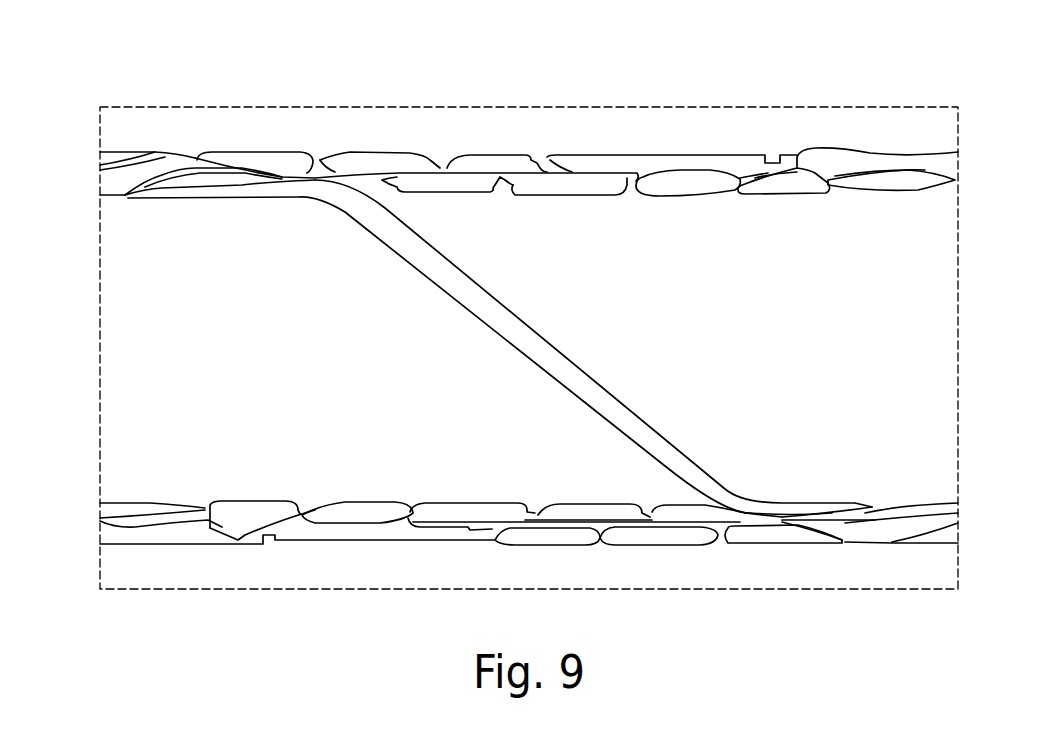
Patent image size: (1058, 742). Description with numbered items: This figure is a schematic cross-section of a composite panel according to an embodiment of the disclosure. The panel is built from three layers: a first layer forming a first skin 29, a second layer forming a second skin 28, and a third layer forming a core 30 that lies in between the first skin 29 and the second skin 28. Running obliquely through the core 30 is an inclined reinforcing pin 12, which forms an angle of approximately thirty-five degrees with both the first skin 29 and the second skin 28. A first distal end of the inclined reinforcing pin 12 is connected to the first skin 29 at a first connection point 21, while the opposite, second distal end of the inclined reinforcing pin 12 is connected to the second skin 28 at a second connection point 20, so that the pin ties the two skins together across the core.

The inclined reinforcing pin 12 is at (612, 410).
The second connection point 20 is at (772, 512).
The first connection point 21 is at (302, 188).
The second skin 28 is at (663, 538).
The first skin 29 is at (584, 157).
The core 30 is at (265, 343).